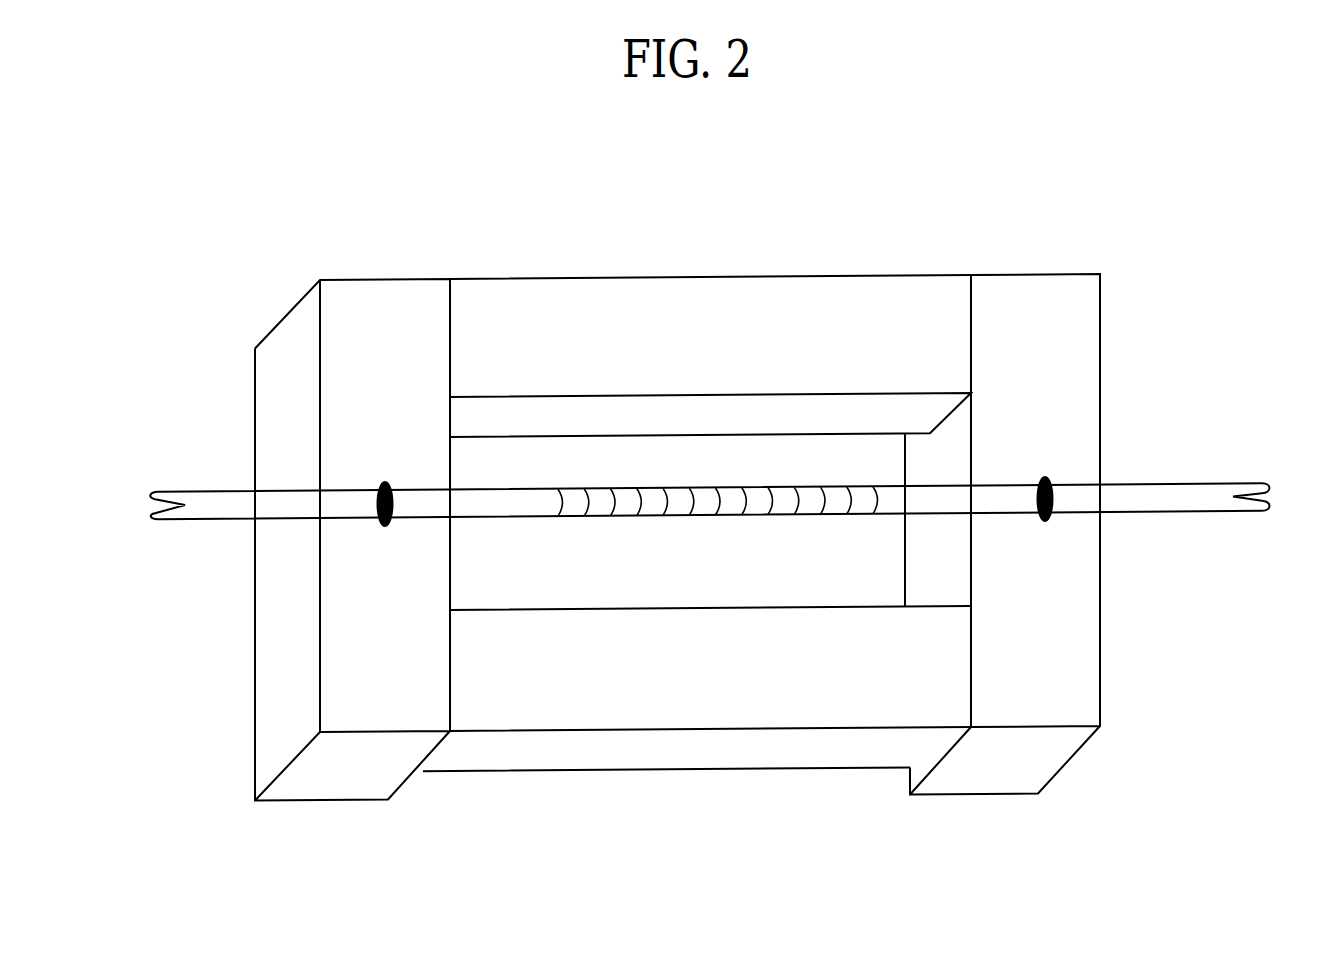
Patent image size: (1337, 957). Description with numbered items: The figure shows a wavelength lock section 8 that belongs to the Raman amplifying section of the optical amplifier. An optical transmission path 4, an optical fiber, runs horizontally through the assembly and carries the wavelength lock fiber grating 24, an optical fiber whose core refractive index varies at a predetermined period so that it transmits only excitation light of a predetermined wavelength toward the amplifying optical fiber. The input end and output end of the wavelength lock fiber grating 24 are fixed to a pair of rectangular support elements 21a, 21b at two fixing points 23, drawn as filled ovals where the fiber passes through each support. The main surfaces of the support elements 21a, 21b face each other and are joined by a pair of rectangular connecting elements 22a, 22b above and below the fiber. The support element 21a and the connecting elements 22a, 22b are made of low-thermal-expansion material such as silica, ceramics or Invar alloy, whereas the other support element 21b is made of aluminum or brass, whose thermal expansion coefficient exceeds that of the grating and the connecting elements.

The optical transmission path 4 is at (213, 505).
The wavelength lock section 8 is at (757, 487).
The rectangular support element 21a is at (352, 539).
The rectangular support element 21b is at (1005, 534).
The rectangular connecting element 22a is at (697, 688).
The rectangular connecting element 22b is at (710, 442).
The fixing point 23 is at (715, 501).
The wavelength lock fiber grating 24 is at (647, 500).